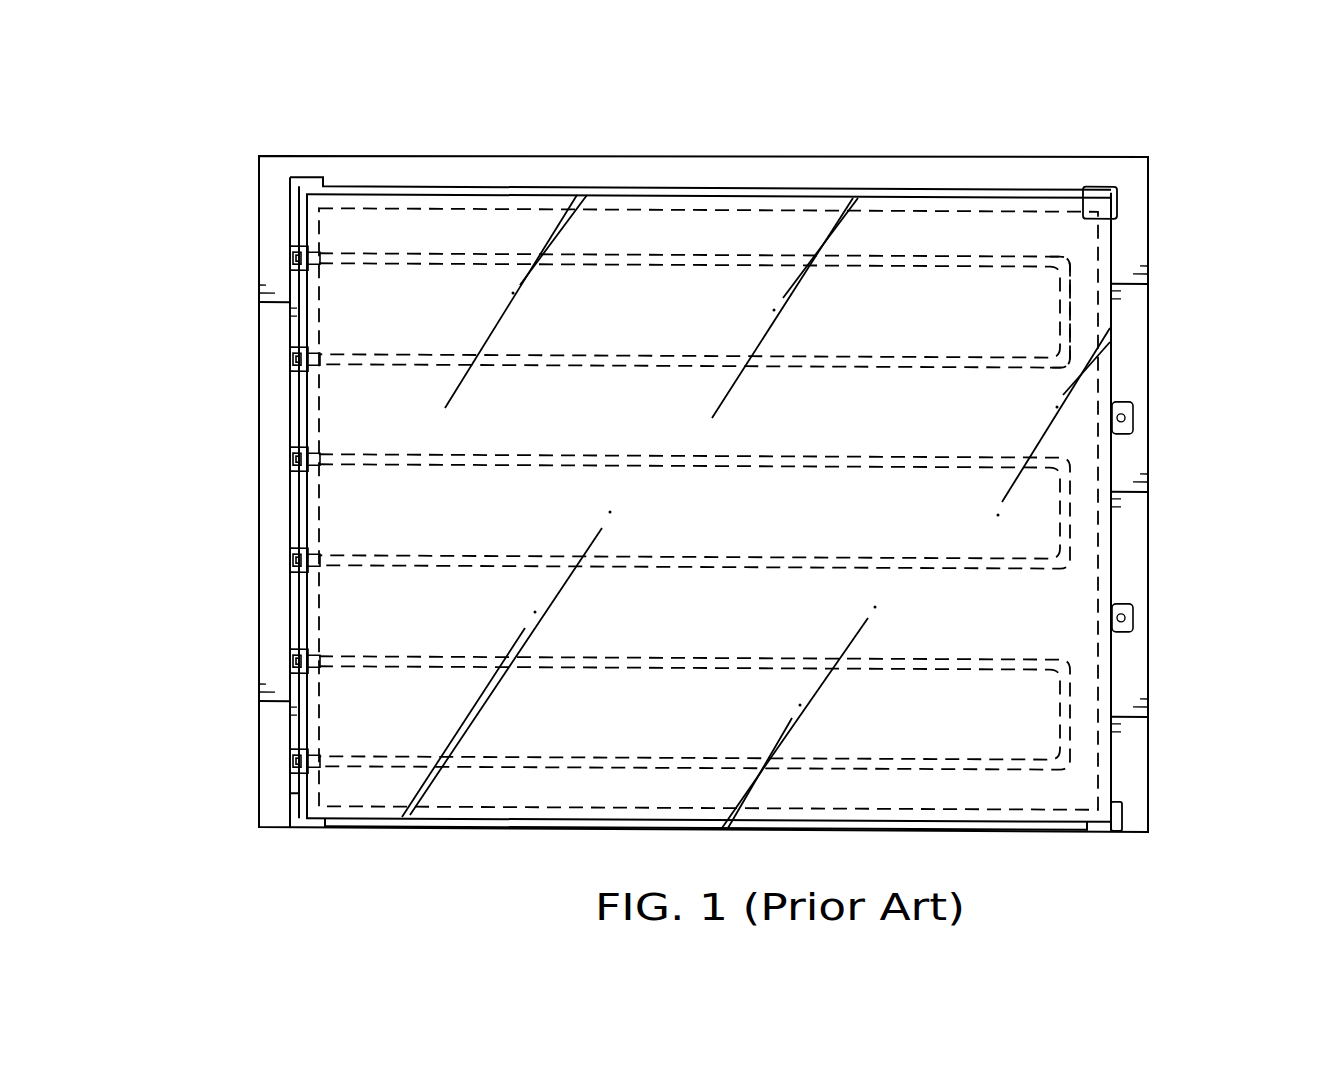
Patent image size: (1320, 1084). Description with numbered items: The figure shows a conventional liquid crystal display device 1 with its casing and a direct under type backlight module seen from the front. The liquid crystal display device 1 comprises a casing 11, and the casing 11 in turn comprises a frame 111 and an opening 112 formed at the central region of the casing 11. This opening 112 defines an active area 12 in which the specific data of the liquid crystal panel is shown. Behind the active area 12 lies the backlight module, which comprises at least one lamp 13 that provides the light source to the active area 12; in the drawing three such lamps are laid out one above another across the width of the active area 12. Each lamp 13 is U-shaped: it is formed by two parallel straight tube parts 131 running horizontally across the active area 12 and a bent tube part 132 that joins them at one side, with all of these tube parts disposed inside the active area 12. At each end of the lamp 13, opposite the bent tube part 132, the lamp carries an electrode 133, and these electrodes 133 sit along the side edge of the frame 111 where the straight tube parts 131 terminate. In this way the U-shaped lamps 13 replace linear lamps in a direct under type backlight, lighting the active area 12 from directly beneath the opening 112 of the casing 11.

The liquid crystal display device 1 is at (245, 128).
The casing 11 is at (1125, 238).
The frame 111 is at (1140, 533).
The opening 112 is at (742, 235).
The active area 12 is at (884, 225).
The lamp 13 is at (630, 255).
The straight tube part 131 is at (490, 255).
The bent tube part 132 is at (1070, 313).
The electrode 133 is at (298, 757).